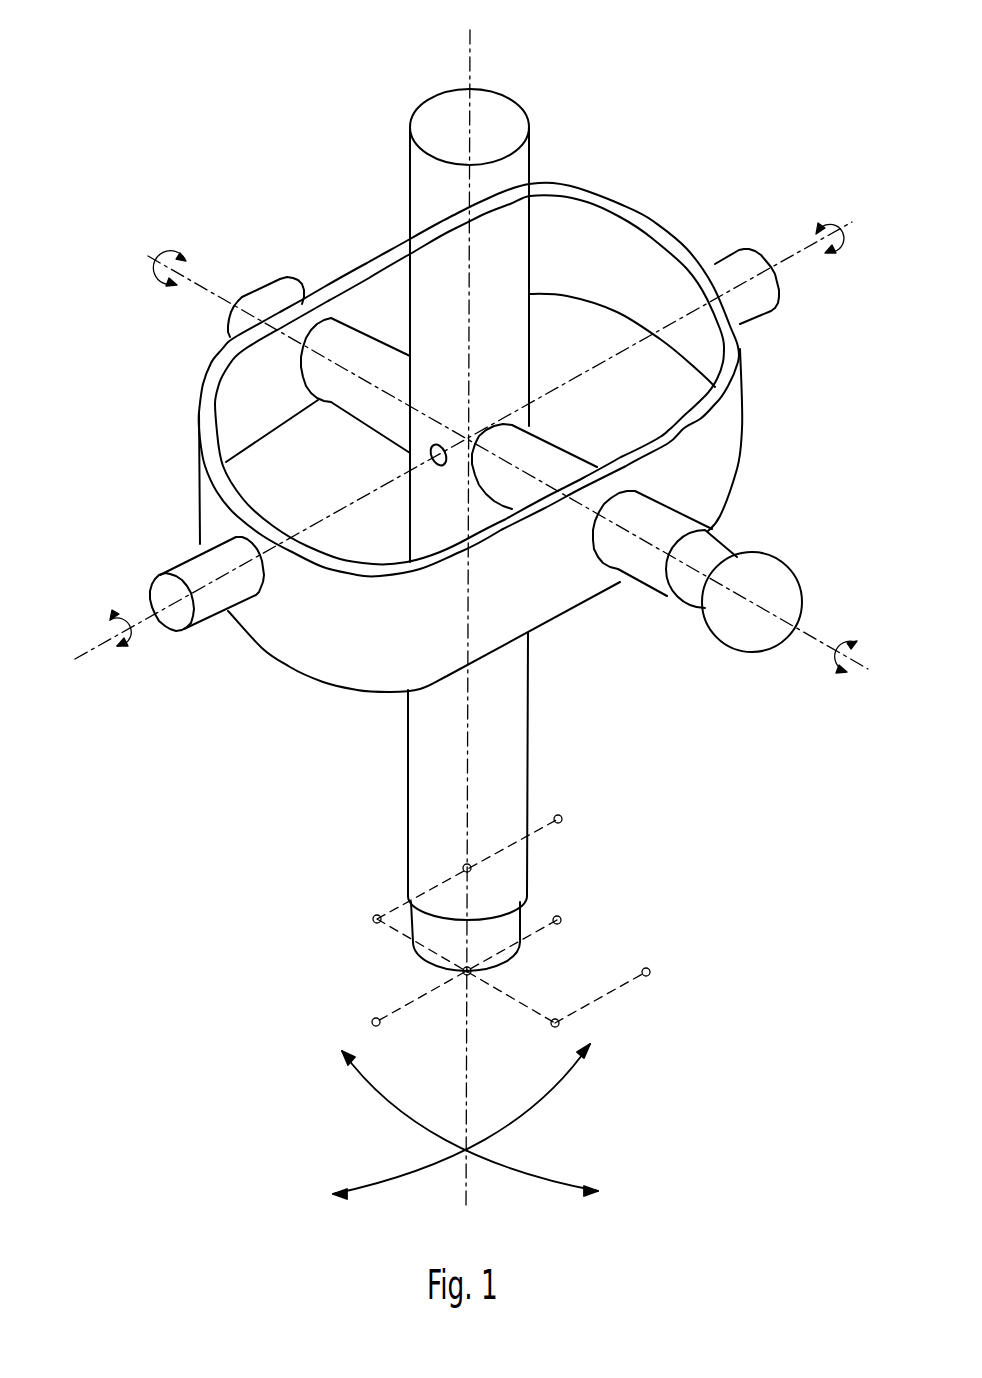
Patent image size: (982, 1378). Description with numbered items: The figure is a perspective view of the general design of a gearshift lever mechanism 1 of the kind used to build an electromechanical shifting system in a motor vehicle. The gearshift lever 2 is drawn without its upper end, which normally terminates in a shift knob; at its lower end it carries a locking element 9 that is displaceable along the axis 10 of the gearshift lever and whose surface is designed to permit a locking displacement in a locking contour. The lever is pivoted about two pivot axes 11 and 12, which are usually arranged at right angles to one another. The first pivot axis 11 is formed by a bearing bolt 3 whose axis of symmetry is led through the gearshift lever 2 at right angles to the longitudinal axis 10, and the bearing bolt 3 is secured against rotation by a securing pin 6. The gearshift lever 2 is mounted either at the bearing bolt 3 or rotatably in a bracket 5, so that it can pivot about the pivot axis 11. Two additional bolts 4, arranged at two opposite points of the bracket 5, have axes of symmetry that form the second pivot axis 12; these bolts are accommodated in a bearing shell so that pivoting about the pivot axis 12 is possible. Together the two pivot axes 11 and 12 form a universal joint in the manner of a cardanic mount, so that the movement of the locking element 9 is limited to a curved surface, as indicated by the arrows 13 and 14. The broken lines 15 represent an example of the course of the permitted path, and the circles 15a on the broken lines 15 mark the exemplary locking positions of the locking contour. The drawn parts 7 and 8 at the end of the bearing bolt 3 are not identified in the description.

The gearshift lever mechanism 1 is at (680, 93).
The gearshift lever 2 is at (524, 113).
The bearing bolt 3 is at (652, 593).
The bolts 4 is at (781, 288).
The bracket 5 is at (738, 440).
The securing pin 6 is at (432, 449).
The ball 7 is at (793, 583).
The collar 8 is at (721, 550).
The locking element 9 is at (513, 922).
The axis of the gearshift lever 10 is at (471, 46).
The first pivot axis 11 is at (212, 290).
The second pivot axis 12 is at (89, 654).
The arrow 13 is at (556, 1089).
The arrow 14 is at (381, 1098).
The broken lines 15 is at (536, 834).
The circles 15a is at (470, 866).